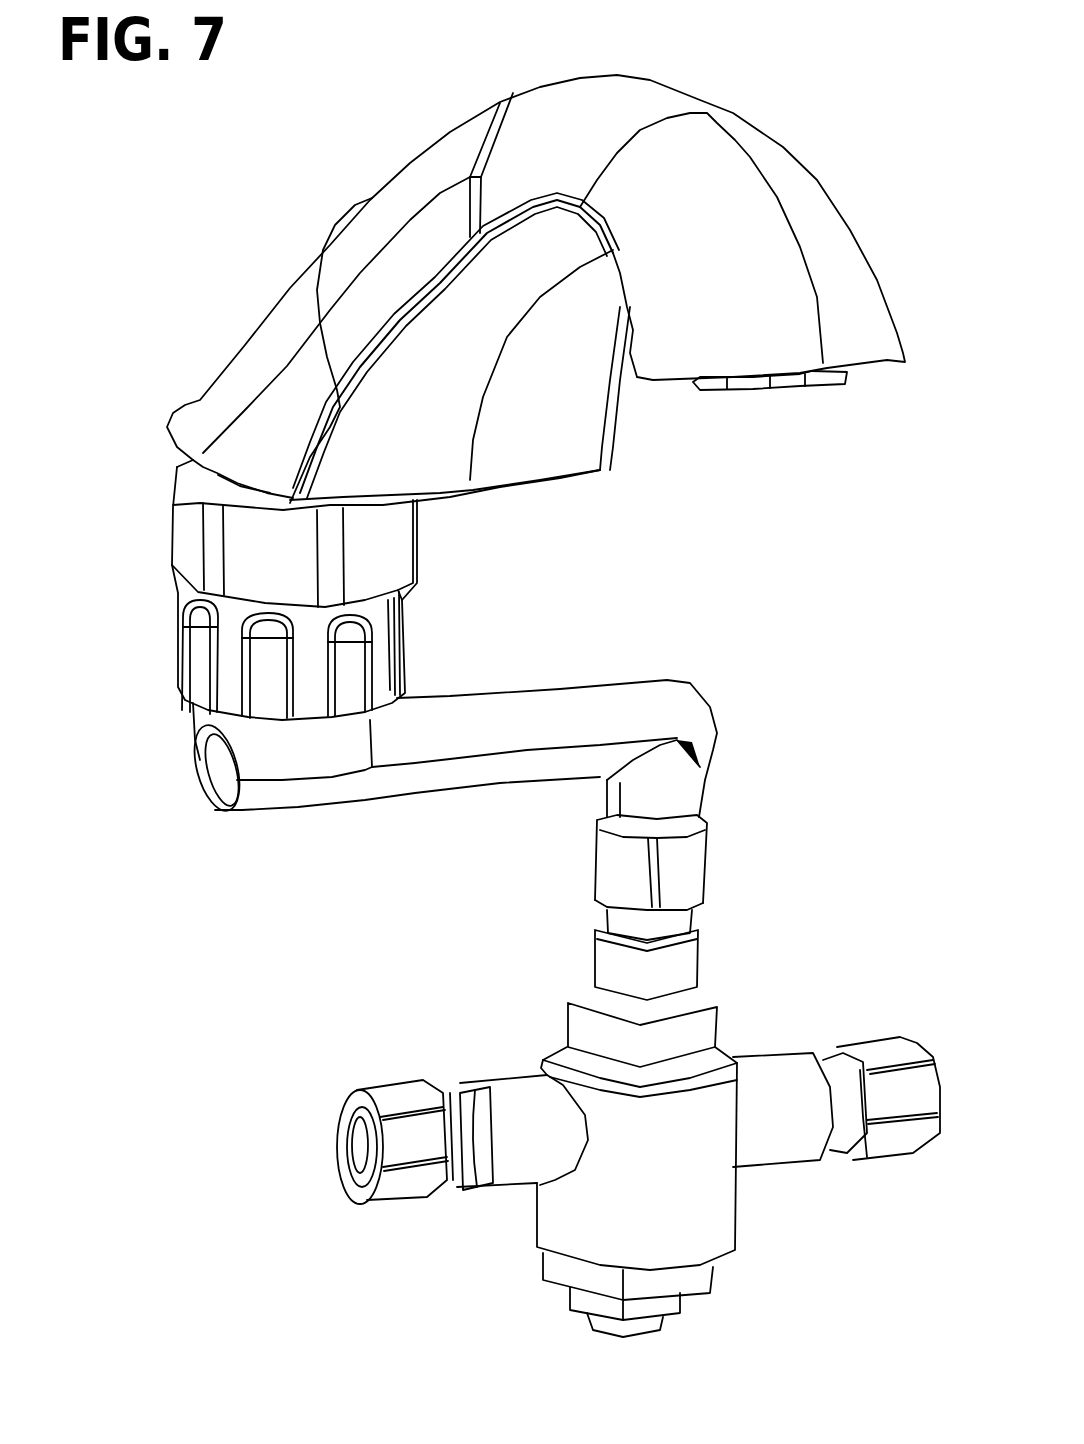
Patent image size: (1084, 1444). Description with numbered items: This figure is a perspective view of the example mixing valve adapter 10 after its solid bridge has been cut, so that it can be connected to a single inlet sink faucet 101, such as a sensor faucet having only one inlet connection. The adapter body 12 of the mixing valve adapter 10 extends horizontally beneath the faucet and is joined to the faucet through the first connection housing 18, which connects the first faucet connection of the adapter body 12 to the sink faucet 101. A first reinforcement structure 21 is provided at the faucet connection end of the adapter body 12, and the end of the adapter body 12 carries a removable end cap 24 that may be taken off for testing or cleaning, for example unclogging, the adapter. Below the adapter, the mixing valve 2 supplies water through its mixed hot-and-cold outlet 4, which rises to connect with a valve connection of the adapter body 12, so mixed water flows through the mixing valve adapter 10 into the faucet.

The single inlet sink faucet 101 is at (295, 236).
The first connection housing 18 is at (413, 576).
The mixing valve adapter 10 is at (420, 765).
The adapter body 12 is at (336, 802).
The first reinforcement structure 21 is at (171, 759).
The removable end cap 24 is at (203, 783).
The mixed hot-and-cold outlet 4 is at (702, 962).
The mixing valve 2 is at (638, 1076).